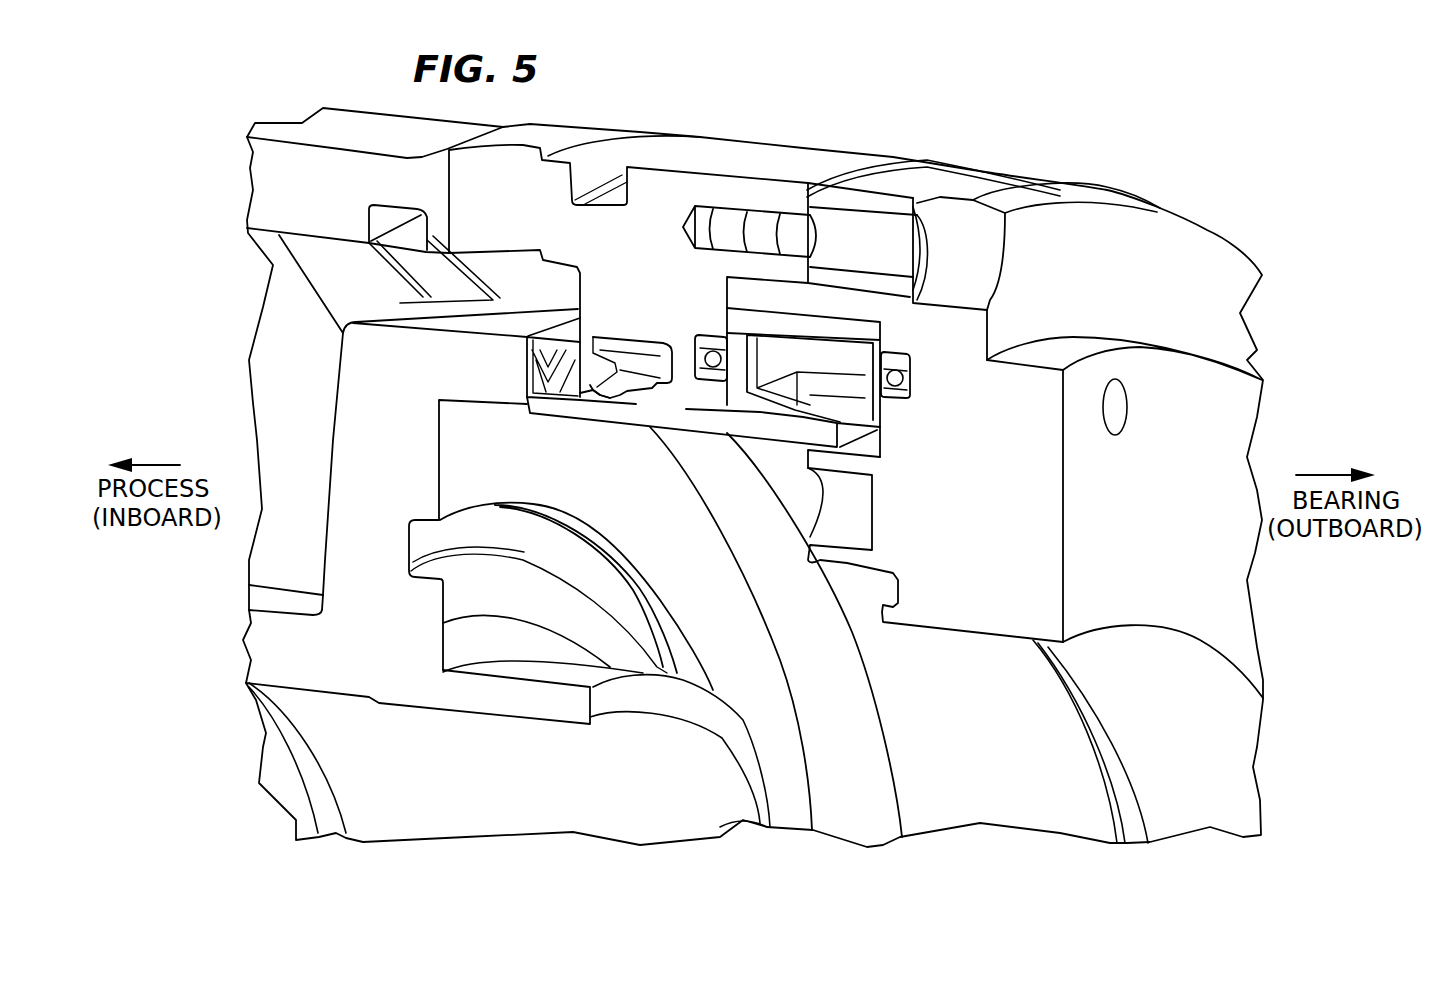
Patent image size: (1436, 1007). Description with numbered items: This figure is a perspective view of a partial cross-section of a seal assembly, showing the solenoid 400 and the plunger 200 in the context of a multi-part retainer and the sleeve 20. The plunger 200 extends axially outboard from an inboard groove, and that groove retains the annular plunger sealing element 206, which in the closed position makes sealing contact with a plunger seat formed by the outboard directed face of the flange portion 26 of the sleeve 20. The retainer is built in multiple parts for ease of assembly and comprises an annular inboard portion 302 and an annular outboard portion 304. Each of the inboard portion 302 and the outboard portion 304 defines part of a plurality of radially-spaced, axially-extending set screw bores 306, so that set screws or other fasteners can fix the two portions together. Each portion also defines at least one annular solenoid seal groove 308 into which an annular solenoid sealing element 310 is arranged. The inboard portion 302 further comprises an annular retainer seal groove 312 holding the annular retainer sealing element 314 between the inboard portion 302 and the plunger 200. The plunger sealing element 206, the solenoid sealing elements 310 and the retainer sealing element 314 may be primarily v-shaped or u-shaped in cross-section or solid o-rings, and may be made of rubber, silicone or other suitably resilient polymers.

The sleeve 20 is at (354, 665).
The flange portion 26 is at (388, 483).
The plunger 200 is at (682, 425).
The plunger sealing element 206 is at (530, 362).
The inboard portion 302 is at (678, 272).
The outboard portion 304 is at (977, 512).
The set screw bores 306 is at (910, 263).
The solenoid seal groove 308 is at (899, 400).
The solenoid sealing elements 310 is at (713, 337).
The retainer seal groove 312 is at (663, 367).
The retainer sealing element 314 is at (620, 383).
The solenoid 400 is at (810, 350).